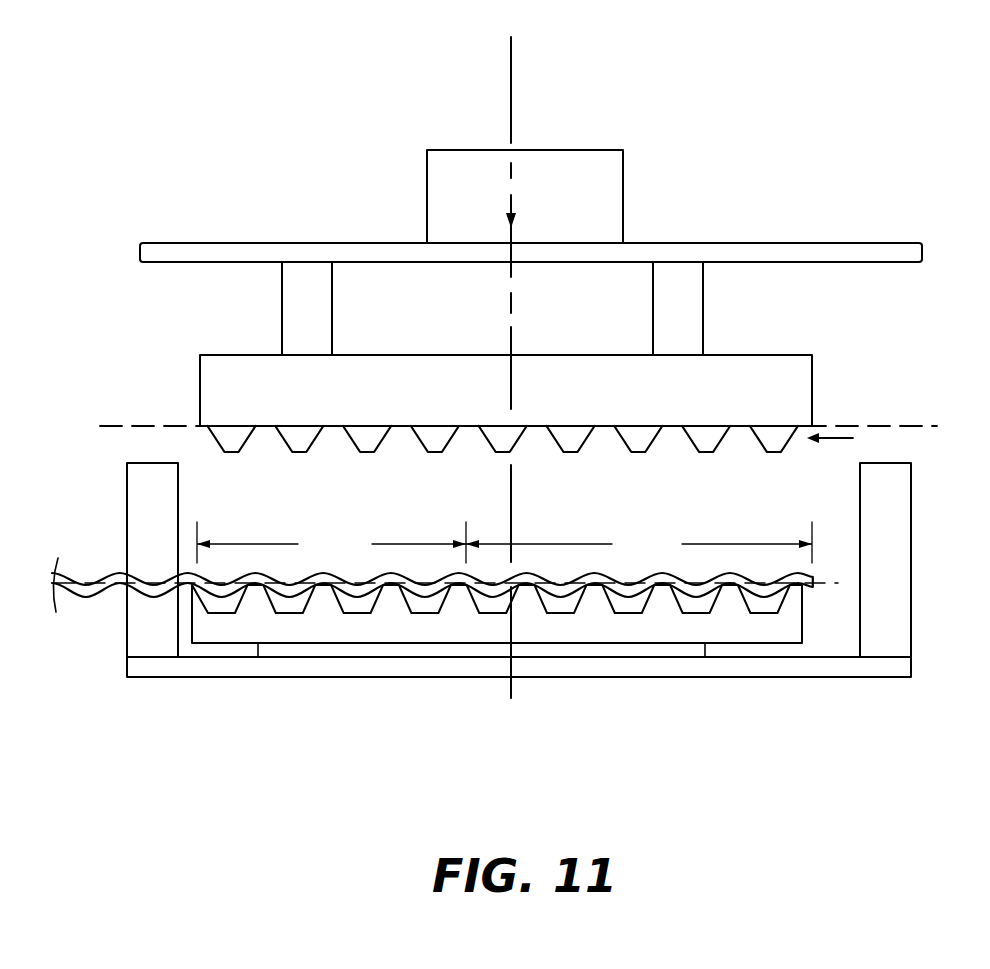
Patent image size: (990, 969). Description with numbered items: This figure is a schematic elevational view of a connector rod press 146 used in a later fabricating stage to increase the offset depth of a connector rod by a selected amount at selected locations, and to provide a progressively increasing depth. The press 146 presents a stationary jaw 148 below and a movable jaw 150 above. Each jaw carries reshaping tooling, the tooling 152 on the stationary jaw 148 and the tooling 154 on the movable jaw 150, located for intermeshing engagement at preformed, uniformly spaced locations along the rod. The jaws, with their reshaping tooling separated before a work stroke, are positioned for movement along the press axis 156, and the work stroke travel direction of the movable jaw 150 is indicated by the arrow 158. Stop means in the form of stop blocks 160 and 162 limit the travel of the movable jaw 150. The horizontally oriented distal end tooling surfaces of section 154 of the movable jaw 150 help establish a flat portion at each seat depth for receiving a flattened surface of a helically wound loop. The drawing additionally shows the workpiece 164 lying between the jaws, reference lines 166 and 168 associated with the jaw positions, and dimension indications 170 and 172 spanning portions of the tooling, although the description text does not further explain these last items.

The press 146 is at (222, 134).
The stationary jaw 148 is at (243, 633).
The movable jaw 150 is at (648, 404).
The reshaping tooling 152 is at (835, 634).
The reshaping tooling 154 is at (850, 477).
The press axis 156 is at (511, 93).
The arrow 158 is at (511, 172).
The stop block 160 is at (157, 537).
The stop block 162 is at (890, 541).
The corrugated sheet 164 is at (78, 582).
The sheet reference line 166 is at (825, 580).
The upper die reference line 168 is at (907, 425).
The right half width 170 is at (639, 542).
The left half width 172 is at (331, 542).